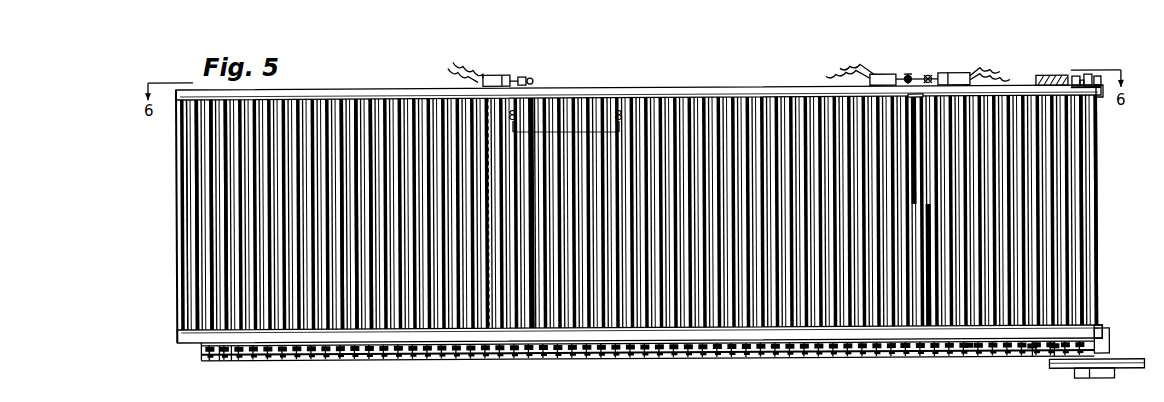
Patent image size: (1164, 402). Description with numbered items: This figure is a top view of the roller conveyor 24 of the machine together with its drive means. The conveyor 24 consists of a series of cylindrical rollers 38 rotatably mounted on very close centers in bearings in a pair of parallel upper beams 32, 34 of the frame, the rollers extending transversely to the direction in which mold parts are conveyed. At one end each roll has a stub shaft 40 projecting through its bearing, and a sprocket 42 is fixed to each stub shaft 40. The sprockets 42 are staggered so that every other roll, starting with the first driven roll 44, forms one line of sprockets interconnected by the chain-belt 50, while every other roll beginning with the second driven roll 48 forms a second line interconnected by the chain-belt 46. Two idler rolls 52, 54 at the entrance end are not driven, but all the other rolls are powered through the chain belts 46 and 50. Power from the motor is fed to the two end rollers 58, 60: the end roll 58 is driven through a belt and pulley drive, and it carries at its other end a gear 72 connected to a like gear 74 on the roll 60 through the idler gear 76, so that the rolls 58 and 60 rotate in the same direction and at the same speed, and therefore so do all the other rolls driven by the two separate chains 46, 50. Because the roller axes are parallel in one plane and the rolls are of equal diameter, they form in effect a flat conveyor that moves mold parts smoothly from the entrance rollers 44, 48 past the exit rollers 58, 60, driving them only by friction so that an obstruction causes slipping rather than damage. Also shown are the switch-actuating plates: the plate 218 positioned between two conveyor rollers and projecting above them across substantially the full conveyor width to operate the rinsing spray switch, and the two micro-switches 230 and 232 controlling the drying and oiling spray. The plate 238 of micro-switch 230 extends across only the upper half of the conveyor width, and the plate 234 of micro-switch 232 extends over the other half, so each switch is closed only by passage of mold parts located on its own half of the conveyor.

The conveyor 24 is at (172, 131).
The upper beam 32 is at (1095, 86).
The upper beam 34 is at (1095, 319).
The cylindrical rollers 38 is at (328, 92).
The stub shaft 40 is at (200, 353).
The sprocket 42 is at (1045, 342).
The first driven roll 44 is at (205, 290).
The chain-belt 46 is at (958, 345).
The second driven roll 48 is at (222, 265).
The chain-belt 50 is at (895, 342).
The idler roll 52 is at (178, 211).
The idler roll 54 is at (190, 189).
The end roller 58 is at (1085, 275).
The end roller 60 is at (1070, 242).
The gear 72 is at (1086, 66).
The gear 74 is at (1062, 72).
The idler gear 76 is at (1079, 70).
The plate 218 is at (518, 92).
The micro-switch 230 is at (870, 69).
The micro-switch 232 is at (948, 69).
The plate 234 is at (921, 330).
The plate 238 is at (901, 110).